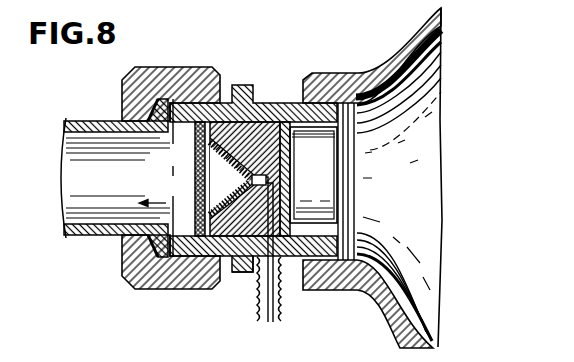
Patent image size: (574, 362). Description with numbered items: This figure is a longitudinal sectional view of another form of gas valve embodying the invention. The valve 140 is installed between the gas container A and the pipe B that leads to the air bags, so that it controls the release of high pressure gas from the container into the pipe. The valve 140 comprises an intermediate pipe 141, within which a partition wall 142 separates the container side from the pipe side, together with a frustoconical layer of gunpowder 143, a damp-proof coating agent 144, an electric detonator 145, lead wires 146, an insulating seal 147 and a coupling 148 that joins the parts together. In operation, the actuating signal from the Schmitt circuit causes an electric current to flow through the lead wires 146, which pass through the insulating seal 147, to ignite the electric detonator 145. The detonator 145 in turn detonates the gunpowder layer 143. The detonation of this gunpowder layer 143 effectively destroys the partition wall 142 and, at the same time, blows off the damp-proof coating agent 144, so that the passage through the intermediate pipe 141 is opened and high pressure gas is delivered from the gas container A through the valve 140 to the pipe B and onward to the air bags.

The valve 140 is at (283, 41).
The intermediate pipe 141 is at (268, 101).
The partition wall 142 is at (195, 152).
The frustoconical layer of gunpowder 143 is at (197, 182).
The damp-proof coating agent 144 is at (291, 165).
The electric detonator 145 is at (297, 182).
The lead wires 146 is at (280, 326).
The insulating seal 147 is at (247, 274).
The coupling 148 is at (157, 290).
The gas container A is at (372, 178).
The pipe B is at (115, 178).